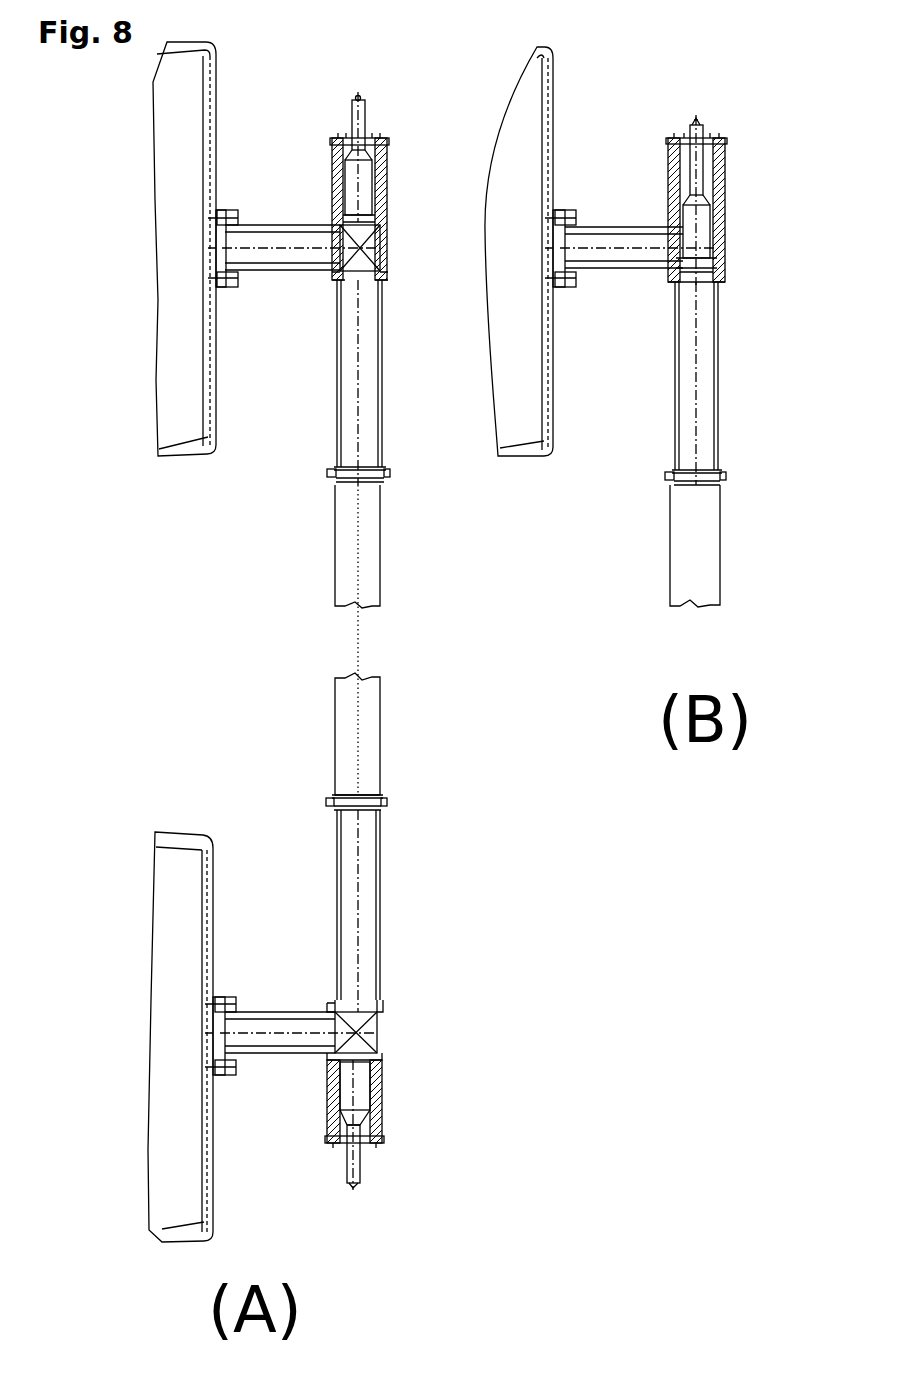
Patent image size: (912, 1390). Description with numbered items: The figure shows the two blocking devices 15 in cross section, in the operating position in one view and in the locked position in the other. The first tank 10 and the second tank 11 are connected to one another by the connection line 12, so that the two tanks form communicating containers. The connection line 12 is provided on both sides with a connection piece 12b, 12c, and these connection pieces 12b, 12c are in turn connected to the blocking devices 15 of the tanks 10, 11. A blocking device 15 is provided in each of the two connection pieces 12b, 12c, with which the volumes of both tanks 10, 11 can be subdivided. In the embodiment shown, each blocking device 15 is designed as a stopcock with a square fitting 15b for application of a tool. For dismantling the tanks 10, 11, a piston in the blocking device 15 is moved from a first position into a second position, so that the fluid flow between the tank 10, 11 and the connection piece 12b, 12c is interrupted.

The first tank 10 is at (170, 1060).
The second tank 11 is at (178, 292).
The connection line 12 is at (362, 578).
The connection piece 12b is at (372, 392).
The connection piece 12c is at (365, 905).
The blocking device 15 is at (298, 185).
The square fitting 15b is at (360, 96).